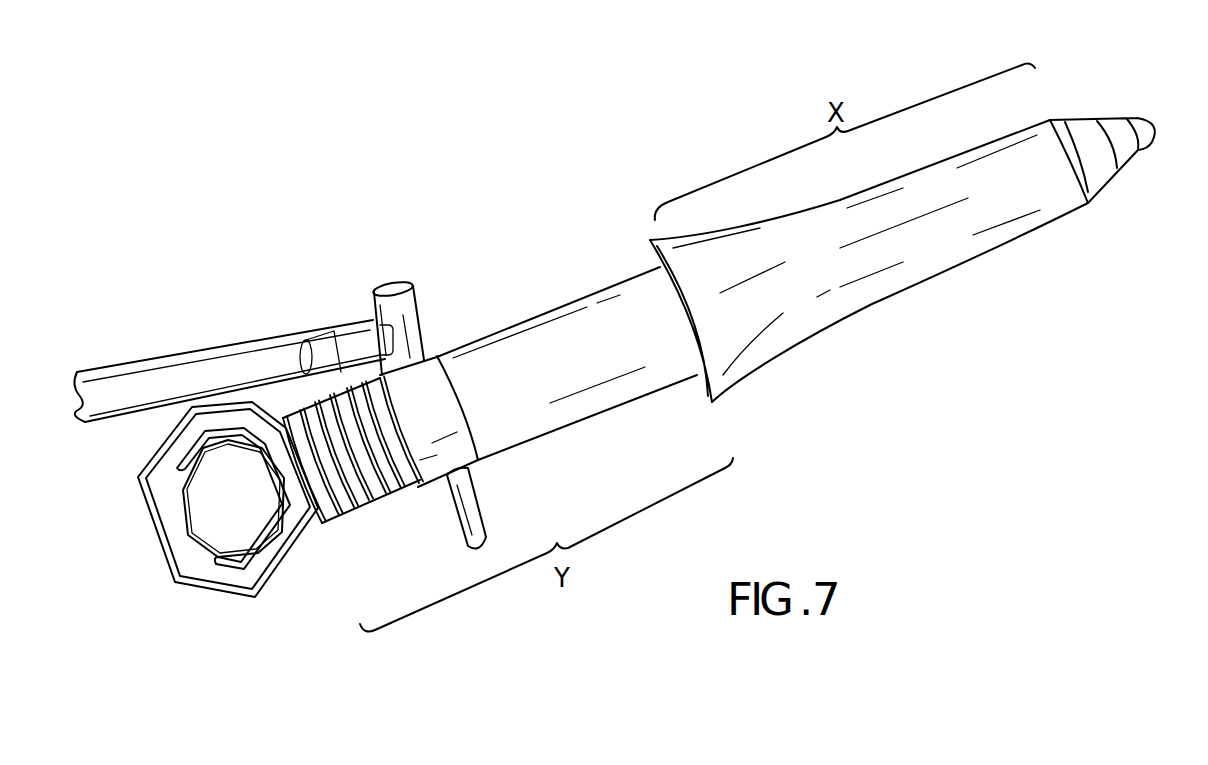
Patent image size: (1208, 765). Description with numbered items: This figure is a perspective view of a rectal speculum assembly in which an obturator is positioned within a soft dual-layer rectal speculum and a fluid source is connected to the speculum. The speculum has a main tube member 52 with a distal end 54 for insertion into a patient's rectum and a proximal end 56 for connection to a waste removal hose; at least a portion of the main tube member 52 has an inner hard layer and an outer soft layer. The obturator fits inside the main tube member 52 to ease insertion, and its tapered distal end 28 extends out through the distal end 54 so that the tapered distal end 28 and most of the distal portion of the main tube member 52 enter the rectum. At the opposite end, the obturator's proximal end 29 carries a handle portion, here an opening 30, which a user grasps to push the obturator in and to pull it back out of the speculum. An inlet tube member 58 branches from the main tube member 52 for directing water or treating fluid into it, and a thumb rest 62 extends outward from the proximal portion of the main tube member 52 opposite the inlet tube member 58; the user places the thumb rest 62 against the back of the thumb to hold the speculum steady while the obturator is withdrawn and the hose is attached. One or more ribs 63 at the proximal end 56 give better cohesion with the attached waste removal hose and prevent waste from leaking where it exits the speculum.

The tapered distal end 28 is at (1121, 162).
The proximal end 29 is at (226, 540).
The opening 30 is at (225, 520).
The main tube member 52 is at (539, 292).
The distal end 54 is at (1052, 119).
The proximal end 56 is at (353, 501).
The inlet tube member 58 is at (373, 302).
The thumb rest 62 is at (484, 512).
The ribs 63 is at (347, 513).